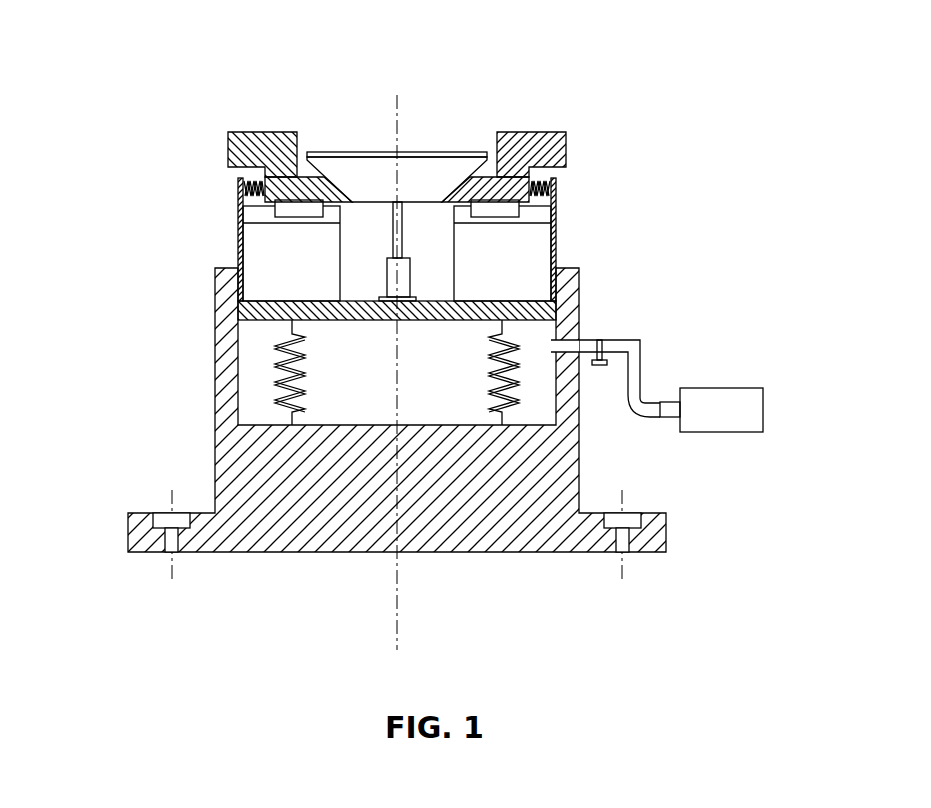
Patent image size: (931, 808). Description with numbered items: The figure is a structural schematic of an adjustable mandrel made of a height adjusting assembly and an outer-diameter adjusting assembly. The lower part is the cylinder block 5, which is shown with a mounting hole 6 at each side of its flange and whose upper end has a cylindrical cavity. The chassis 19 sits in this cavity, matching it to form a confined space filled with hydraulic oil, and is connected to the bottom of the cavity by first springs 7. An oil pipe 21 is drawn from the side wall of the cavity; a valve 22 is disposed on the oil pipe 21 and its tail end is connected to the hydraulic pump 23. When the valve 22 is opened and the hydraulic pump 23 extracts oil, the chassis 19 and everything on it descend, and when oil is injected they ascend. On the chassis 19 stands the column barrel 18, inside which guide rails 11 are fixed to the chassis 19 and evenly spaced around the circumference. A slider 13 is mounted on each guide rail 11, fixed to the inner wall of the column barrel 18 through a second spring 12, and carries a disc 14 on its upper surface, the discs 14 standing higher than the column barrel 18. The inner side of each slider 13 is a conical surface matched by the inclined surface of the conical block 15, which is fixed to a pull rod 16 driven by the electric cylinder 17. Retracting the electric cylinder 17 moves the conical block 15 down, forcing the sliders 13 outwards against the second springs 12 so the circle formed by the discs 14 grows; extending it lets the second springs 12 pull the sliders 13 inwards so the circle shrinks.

The cylinder block 5 is at (123, 535).
The mounting hole 6 is at (155, 511).
The first spring 7 is at (268, 398).
The guide rail 11 is at (247, 208).
The second spring 12 is at (282, 177).
The slider 13 is at (231, 172).
The disc 14 is at (257, 124).
The conical block 15 is at (442, 163).
The pull rod 16 is at (411, 221).
The electric cylinder 17 is at (409, 269).
The column barrel 18 is at (566, 227).
The chassis 19 is at (476, 307).
The oil pipe 21 is at (623, 335).
The valve 22 is at (623, 354).
The hydraulic pump 23 is at (738, 400).